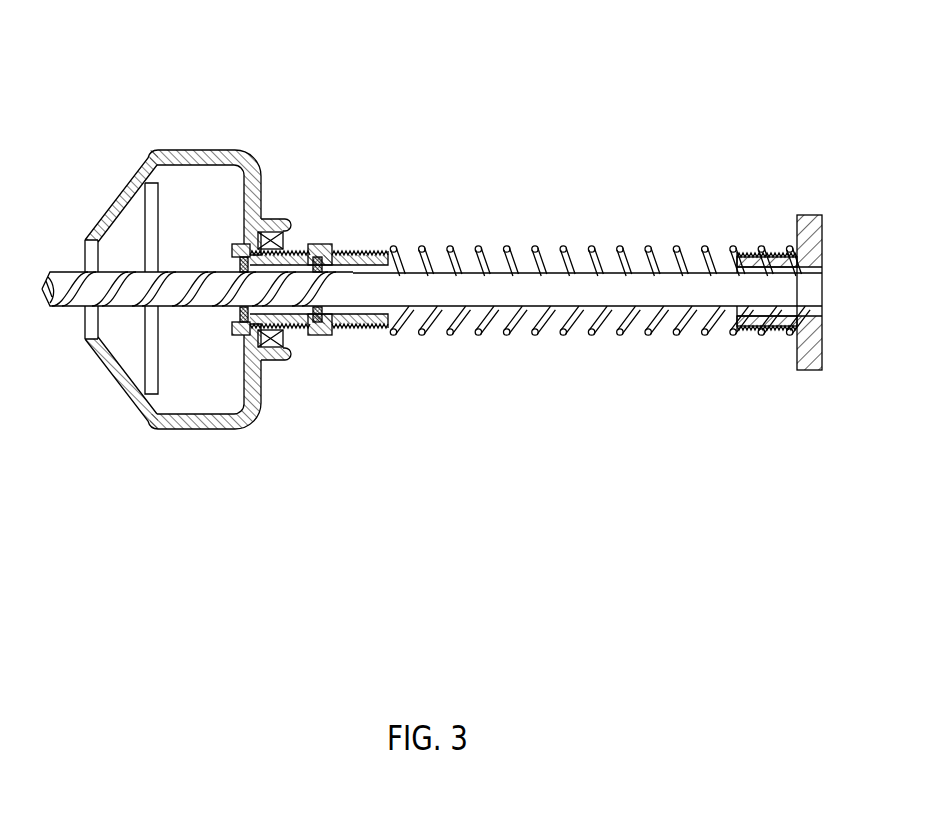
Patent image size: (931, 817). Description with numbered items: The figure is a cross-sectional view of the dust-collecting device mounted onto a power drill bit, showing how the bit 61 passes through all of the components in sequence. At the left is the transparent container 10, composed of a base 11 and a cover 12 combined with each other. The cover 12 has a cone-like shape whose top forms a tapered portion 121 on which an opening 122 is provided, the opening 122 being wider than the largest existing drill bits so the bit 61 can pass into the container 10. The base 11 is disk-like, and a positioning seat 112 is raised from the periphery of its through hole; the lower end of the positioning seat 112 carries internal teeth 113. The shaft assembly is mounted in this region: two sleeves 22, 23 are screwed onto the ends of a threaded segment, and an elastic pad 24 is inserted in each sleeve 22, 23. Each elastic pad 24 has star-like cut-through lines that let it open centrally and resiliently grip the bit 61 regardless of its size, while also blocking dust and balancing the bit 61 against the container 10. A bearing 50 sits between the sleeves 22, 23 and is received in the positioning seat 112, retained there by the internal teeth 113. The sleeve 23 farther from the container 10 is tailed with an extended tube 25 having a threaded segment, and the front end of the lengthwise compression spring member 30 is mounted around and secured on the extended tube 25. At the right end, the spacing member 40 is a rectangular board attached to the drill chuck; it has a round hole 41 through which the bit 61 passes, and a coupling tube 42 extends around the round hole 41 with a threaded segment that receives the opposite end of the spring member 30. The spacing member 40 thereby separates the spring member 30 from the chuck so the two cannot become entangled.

The container 10 is at (169, 89).
The base 11 is at (217, 150).
The cover 12 is at (146, 155).
The tapered portion 121 is at (106, 372).
The opening 122 is at (90, 258).
The positioning seat 112 is at (302, 228).
The internal teeth 113 is at (293, 361).
The bearing 50 is at (276, 231).
The sleeve 22 is at (232, 328).
The sleeve 23 is at (326, 250).
The elastic pad 24 is at (237, 251).
The extended tube 25 is at (372, 331).
The spring member 30 is at (538, 246).
The bit 61 is at (470, 284).
The spacing member 40 is at (810, 214).
The round hole 41 is at (773, 316).
The coupling tube 42 is at (750, 255).